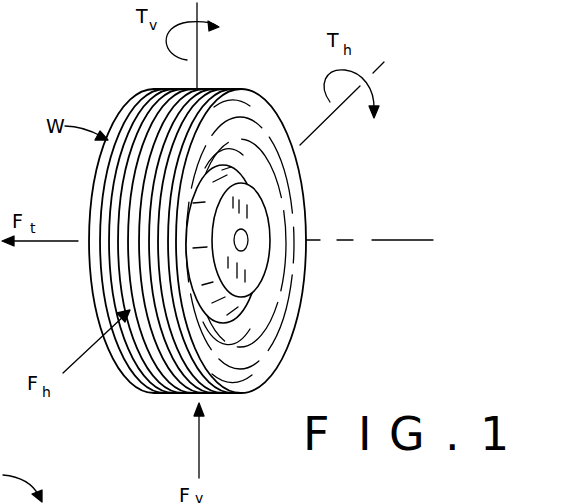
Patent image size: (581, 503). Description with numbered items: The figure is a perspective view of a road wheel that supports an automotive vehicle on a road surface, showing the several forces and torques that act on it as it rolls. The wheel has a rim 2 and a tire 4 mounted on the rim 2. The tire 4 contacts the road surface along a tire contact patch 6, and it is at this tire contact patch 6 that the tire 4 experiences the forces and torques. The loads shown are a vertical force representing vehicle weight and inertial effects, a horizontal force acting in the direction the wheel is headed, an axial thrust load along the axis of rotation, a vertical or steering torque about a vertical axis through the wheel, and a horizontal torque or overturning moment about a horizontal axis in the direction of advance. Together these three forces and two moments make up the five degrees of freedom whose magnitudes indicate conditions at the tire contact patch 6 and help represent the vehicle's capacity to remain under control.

The rim 2 is at (242, 200).
The tire 4 is at (280, 327).
The tire contact patch 6 is at (173, 393).